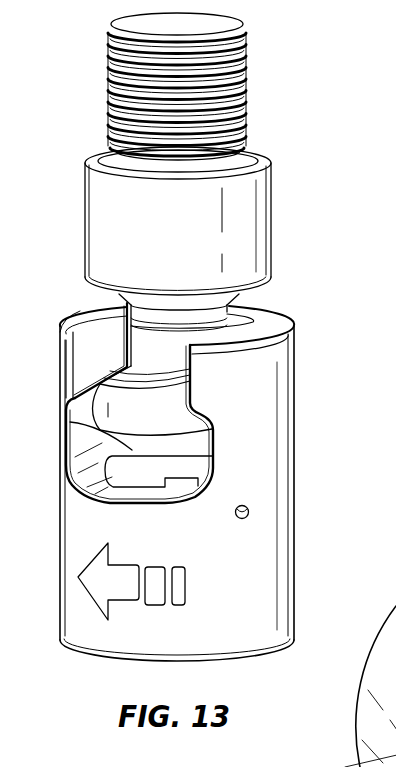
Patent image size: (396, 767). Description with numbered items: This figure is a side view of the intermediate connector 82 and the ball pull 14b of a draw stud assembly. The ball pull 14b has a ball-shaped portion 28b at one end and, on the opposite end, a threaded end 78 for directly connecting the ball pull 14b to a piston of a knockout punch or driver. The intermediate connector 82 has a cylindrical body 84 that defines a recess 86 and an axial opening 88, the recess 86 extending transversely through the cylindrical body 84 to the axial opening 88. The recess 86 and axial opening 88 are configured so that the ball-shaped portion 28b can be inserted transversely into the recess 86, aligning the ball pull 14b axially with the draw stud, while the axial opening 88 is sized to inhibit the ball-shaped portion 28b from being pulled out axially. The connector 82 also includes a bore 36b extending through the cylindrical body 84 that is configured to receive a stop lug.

The threaded end 78 is at (113, 97).
The ball pull 14b is at (292, 252).
The intermediate connector 82 is at (308, 503).
The axial opening 88 is at (102, 352).
The recess 86 is at (217, 445).
The ball-shaped portion 28b is at (70, 422).
The bore 36b is at (249, 517).
The cylindrical body 84 is at (97, 633).